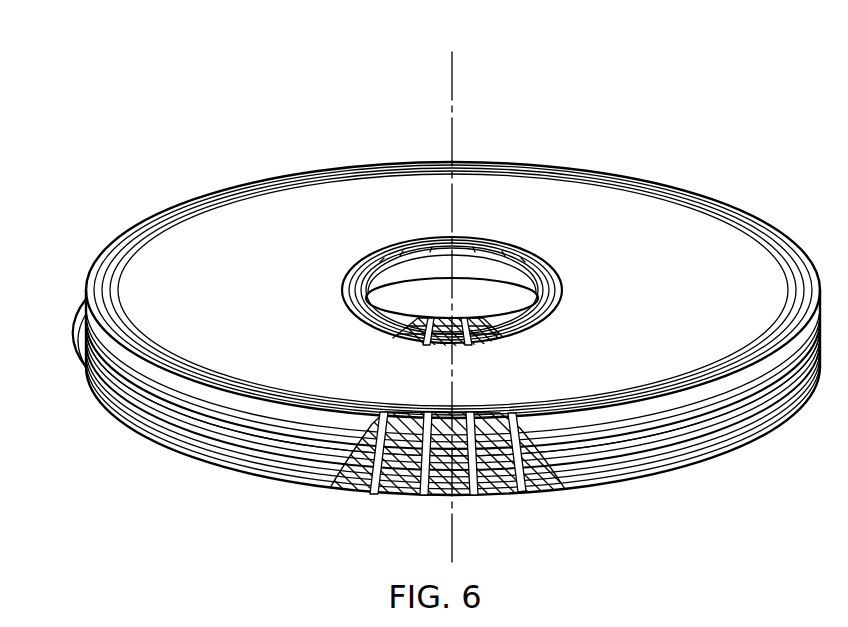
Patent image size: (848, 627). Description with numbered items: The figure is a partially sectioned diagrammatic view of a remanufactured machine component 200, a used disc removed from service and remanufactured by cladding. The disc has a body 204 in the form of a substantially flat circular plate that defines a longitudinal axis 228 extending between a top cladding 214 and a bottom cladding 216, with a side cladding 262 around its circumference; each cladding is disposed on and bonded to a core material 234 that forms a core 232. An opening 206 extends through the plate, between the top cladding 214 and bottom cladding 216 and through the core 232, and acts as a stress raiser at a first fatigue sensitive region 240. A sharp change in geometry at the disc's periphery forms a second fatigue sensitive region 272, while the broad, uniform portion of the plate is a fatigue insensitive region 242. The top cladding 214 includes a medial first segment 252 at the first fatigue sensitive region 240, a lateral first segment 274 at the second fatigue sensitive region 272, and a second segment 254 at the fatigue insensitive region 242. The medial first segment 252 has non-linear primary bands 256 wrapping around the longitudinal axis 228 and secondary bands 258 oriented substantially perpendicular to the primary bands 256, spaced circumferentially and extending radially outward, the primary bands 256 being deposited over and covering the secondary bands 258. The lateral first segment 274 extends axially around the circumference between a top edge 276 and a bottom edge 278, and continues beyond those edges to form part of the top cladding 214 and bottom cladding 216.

The remanufactured machine component 200 is at (753, 72).
The longitudinal axis 228 is at (450, 99).
The body 204 is at (684, 217).
The top cladding 214 is at (597, 188).
The fatigue insensitive region 242 is at (251, 205).
The second segment 254 is at (175, 237).
The primary bands 256 is at (417, 237).
The secondary bands 258 is at (423, 345).
The medial first segment 252 is at (375, 253).
The core material 234 is at (458, 270).
The core 232 is at (498, 276).
The opening 206 is at (523, 282).
The first fatigue sensitive region 240 is at (341, 277).
The top edge 276 is at (86, 297).
The bottom edge 278 is at (107, 405).
The second fatigue sensitive region 272 is at (157, 456).
The lateral first segment 274 is at (277, 467).
The side cladding 262 is at (775, 410).
The bottom cladding 216 is at (660, 481).